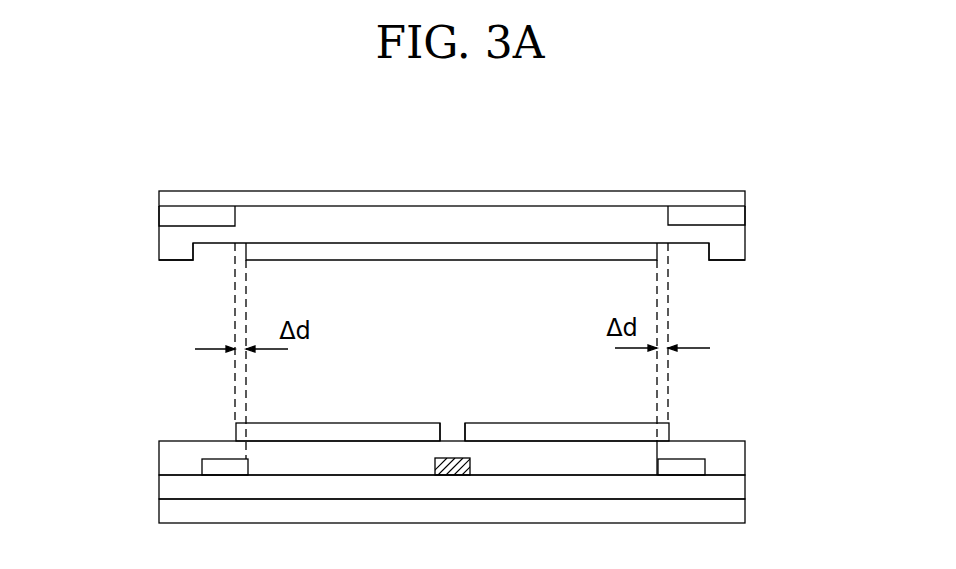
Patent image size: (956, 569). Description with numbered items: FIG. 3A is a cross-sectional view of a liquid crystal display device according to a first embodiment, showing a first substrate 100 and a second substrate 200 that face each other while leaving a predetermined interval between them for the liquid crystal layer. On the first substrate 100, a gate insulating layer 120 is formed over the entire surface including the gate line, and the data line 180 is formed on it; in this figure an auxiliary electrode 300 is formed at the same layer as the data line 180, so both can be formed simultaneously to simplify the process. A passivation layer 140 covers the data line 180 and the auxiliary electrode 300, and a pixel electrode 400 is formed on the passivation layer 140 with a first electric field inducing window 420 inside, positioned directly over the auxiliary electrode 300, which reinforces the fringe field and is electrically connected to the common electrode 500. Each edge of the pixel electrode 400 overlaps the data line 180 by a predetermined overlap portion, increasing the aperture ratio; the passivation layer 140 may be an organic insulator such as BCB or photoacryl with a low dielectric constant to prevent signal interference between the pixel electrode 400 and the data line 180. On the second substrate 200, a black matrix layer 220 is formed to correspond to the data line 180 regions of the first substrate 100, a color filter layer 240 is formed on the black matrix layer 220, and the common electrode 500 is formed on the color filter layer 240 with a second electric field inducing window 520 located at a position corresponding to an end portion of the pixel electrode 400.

The first substrate 100 is at (745, 507).
The gate insulating layer 120 is at (163, 486).
The passivation layer 140 is at (745, 457).
The data line 180 is at (228, 468).
The second substrate 200 is at (745, 196).
The black matrix layer 220 is at (162, 218).
The color filter layer 240 is at (537, 215).
The auxiliary electrode 300 is at (455, 468).
The pixel electrode 400 is at (590, 430).
The first electric field inducing window 420 is at (452, 430).
The common electrode 500 is at (450, 250).
The second electric field inducing window 520 is at (690, 252).